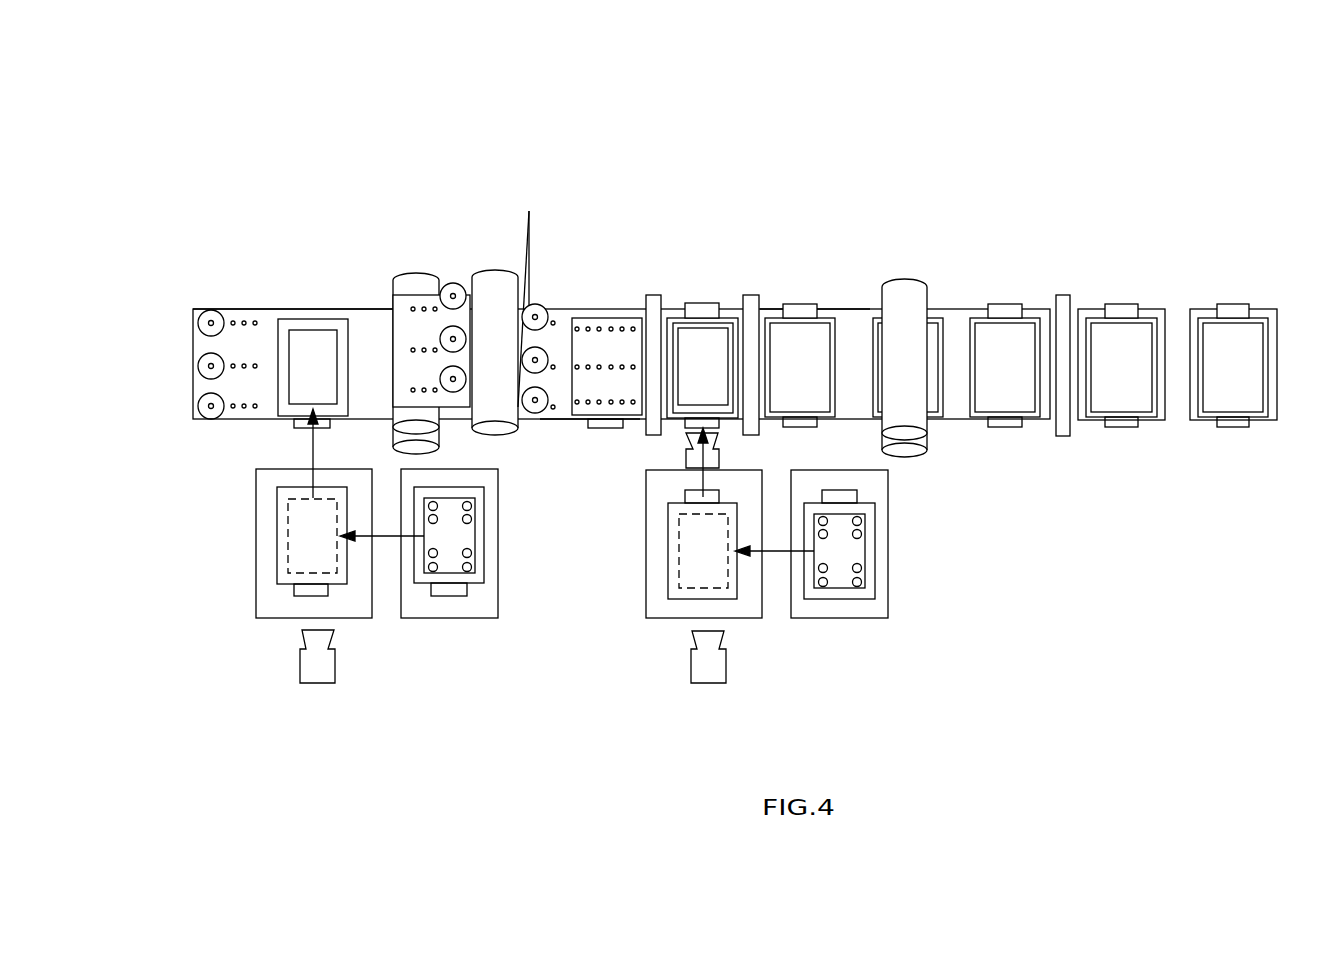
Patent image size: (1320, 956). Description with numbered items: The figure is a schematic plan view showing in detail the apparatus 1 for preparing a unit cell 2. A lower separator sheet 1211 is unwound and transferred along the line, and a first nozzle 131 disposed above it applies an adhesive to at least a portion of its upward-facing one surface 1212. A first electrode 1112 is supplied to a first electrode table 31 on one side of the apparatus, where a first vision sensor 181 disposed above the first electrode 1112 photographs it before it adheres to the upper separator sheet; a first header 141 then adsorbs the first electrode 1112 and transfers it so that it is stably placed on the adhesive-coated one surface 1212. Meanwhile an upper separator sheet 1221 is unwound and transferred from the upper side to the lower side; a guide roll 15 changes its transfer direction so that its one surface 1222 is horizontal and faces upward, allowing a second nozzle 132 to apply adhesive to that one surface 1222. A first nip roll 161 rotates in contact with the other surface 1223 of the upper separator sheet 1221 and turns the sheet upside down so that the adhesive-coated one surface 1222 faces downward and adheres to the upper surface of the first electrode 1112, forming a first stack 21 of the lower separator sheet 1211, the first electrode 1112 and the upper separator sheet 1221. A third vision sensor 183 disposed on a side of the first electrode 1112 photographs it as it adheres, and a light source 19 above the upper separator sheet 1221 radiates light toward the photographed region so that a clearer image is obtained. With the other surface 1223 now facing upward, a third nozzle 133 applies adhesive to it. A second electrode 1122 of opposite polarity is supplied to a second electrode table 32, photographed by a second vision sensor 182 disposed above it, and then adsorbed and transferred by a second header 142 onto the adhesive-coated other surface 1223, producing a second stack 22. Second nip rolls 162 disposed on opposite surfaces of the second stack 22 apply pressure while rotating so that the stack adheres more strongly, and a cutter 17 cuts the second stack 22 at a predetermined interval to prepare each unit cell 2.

The apparatus for preparing a unit cell 1 is at (951, 138).
The unit cell 2 is at (1233, 310).
The guide roll 15 is at (495, 283).
The cutter 17 is at (1062, 294).
The light source 19 is at (653, 294).
The first stack 21 is at (558, 436).
The second stack 22 is at (828, 290).
The first electrode table 31 is at (349, 576).
The second electrode table 32 is at (739, 576).
The first nozzle 131 is at (199, 323).
The second nozzle 132 is at (452, 283).
The third nozzle 133 is at (540, 302).
The first header 141 is at (294, 397).
The second header 142 is at (692, 402).
The first nip roll 161 is at (440, 442).
The second nip roll 162 is at (920, 450).
The first vision sensor 181 is at (335, 668).
The second vision sensor 182 is at (726, 668).
The third vision sensor 183 is at (717, 453).
The first electrode 1112 is at (288, 578).
The second electrode 1122 is at (685, 592).
The lower separator sheet 1211 is at (266, 308).
The one surface of the lower separator sheet 1212 is at (242, 317).
The upper separator sheet 1221 is at (524, 250).
The one surface of the upper separator sheet 1222 is at (405, 295).
The other surface of the upper separator sheet 1223 is at (595, 315).